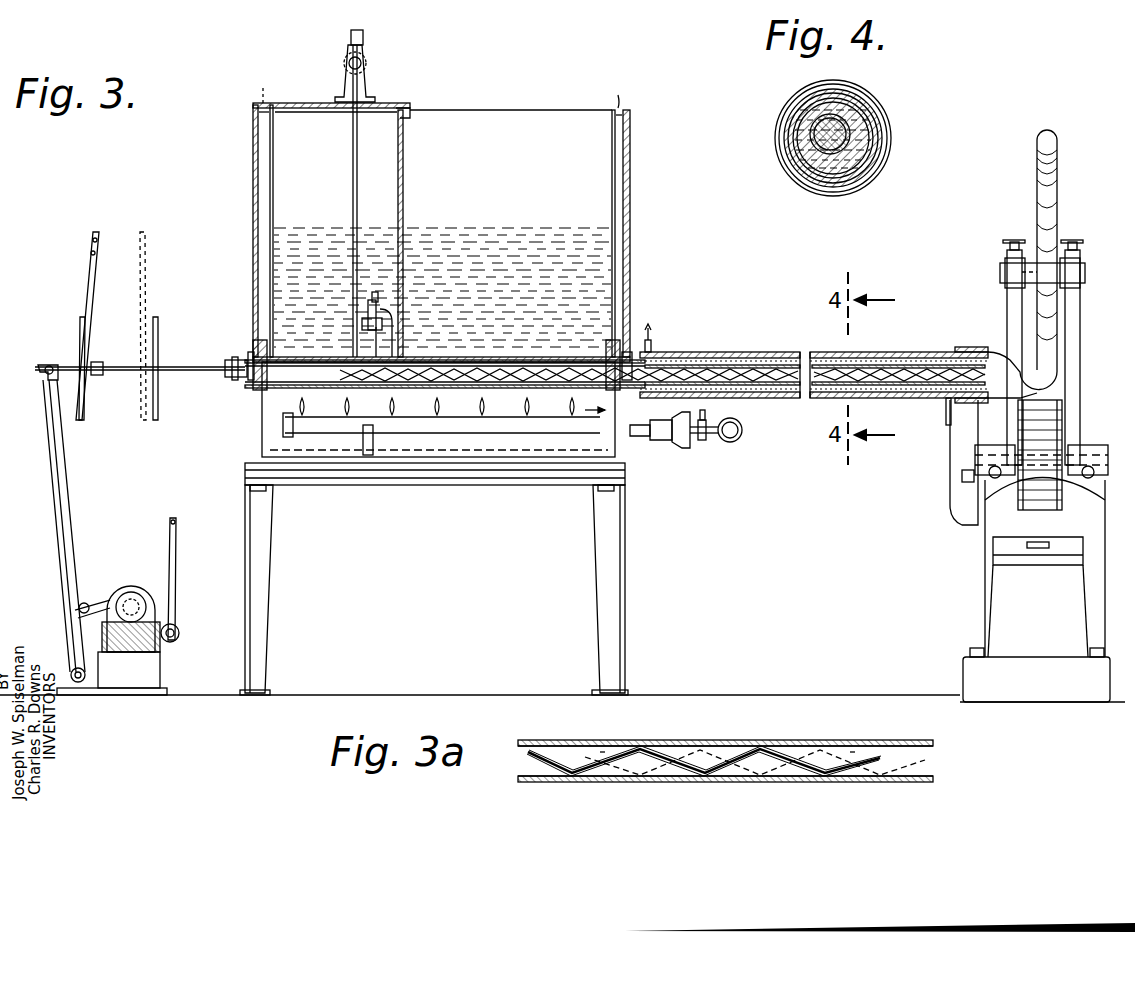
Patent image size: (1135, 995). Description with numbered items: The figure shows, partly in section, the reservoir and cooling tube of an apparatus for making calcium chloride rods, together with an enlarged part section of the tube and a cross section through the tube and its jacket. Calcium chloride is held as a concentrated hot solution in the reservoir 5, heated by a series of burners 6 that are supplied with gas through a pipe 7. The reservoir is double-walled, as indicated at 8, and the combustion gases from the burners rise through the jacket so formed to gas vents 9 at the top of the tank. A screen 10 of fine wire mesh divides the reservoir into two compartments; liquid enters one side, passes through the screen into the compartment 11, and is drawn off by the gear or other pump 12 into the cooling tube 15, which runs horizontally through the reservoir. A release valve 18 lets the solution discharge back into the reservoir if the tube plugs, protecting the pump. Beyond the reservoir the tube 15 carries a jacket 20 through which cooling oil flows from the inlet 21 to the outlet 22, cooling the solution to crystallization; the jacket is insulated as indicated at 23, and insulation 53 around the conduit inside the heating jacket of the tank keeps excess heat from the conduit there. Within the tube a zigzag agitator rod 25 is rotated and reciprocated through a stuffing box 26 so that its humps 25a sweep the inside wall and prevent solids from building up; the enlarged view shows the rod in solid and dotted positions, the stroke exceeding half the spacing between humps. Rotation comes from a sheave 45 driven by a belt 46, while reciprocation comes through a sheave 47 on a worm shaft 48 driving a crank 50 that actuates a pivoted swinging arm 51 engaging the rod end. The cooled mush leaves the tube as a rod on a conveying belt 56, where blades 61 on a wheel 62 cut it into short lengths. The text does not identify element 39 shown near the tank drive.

In FIG. 3, the reservoir 5 is at (538, 148).
In FIG. 3, the burners 6 is at (405, 435).
In FIG. 3, the pipe 7 is at (728, 443).
In FIG. 3, the double wall 8 is at (262, 190).
In FIG. 3, the gas vents 9 is at (436, 85).
In FIG. 3, the screen 10 is at (403, 138).
In FIG. 3, the compartment 11 is at (305, 140).
In FIG. 3, the pump 12 is at (350, 390).
In FIG. 3, the cooling tube 15 is at (500, 362).
In FIG. 4, the cooling tube 15 is at (818, 150).
In FIG. 3A, the cooling tube 15 is at (916, 742).
In FIG. 3, the release valve 18 is at (380, 302).
In FIG. 3, the jacket 20 is at (788, 400).
In FIG. 4, the jacket 20 is at (880, 105).
In FIG. 3, the inlet 21 is at (946, 418).
In FIG. 3, the outlet 22 is at (662, 400).
In FIG. 3, the insulation 23 is at (800, 340).
In FIG. 4, the insulation 23 is at (778, 135).
In FIG. 3, the agitator rod 25 is at (185, 373).
In FIG. 4, the agitator rod 25 is at (868, 150).
In FIG. 3A, the agitator rod 25 is at (720, 752).
In FIG. 3A, the humps 25a is at (638, 745).
In FIG. 3, the stuffing box 26 is at (228, 358).
In FIG. 3, the shaft 39 is at (352, 168).
In FIG. 3, the sheave 45 is at (88, 400).
In FIG. 3, the belt 46 is at (96, 235).
In FIG. 3, the sheave 47 is at (178, 620).
In FIG. 3, the worm shaft 48 is at (162, 640).
In FIG. 3, the crank 50 is at (124, 600).
In FIG. 3, the swinging arm 51 is at (52, 520).
In FIG. 3, the insulation 53 is at (262, 345).
In FIG. 3, the conveying belt 56 is at (1048, 495).
In FIG. 3, the blades 61 is at (1040, 175).
In FIG. 3, the wheel 62 is at (1032, 214).